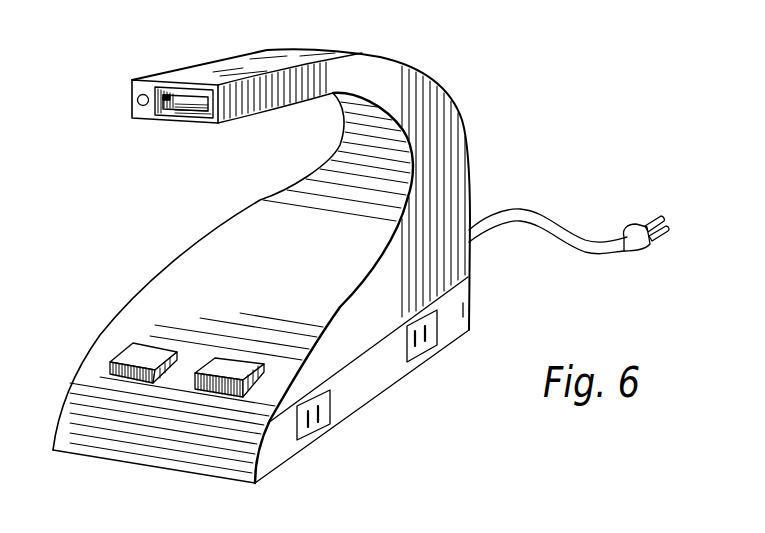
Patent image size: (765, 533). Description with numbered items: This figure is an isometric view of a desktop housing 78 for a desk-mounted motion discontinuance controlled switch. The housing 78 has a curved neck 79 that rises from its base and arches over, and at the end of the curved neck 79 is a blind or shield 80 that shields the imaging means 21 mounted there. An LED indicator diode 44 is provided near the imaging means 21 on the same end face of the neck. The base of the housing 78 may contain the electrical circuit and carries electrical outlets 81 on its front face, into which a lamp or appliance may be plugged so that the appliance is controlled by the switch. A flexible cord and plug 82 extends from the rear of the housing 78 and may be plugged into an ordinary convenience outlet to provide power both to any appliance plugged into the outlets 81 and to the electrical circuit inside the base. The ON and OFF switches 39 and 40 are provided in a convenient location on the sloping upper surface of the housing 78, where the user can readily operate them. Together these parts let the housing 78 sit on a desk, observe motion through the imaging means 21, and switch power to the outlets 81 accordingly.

The imaging means 21 is at (202, 97).
The blind or shield 80 is at (163, 93).
The LED indicator diode 44 is at (137, 100).
The curved neck 79 is at (357, 62).
The desktop housing 78 is at (457, 150).
The flexible cord and plug 82 is at (600, 240).
The ON switch 39 is at (117, 357).
The OFF switch 40 is at (211, 373).
The electrical outlets 81 is at (318, 424).